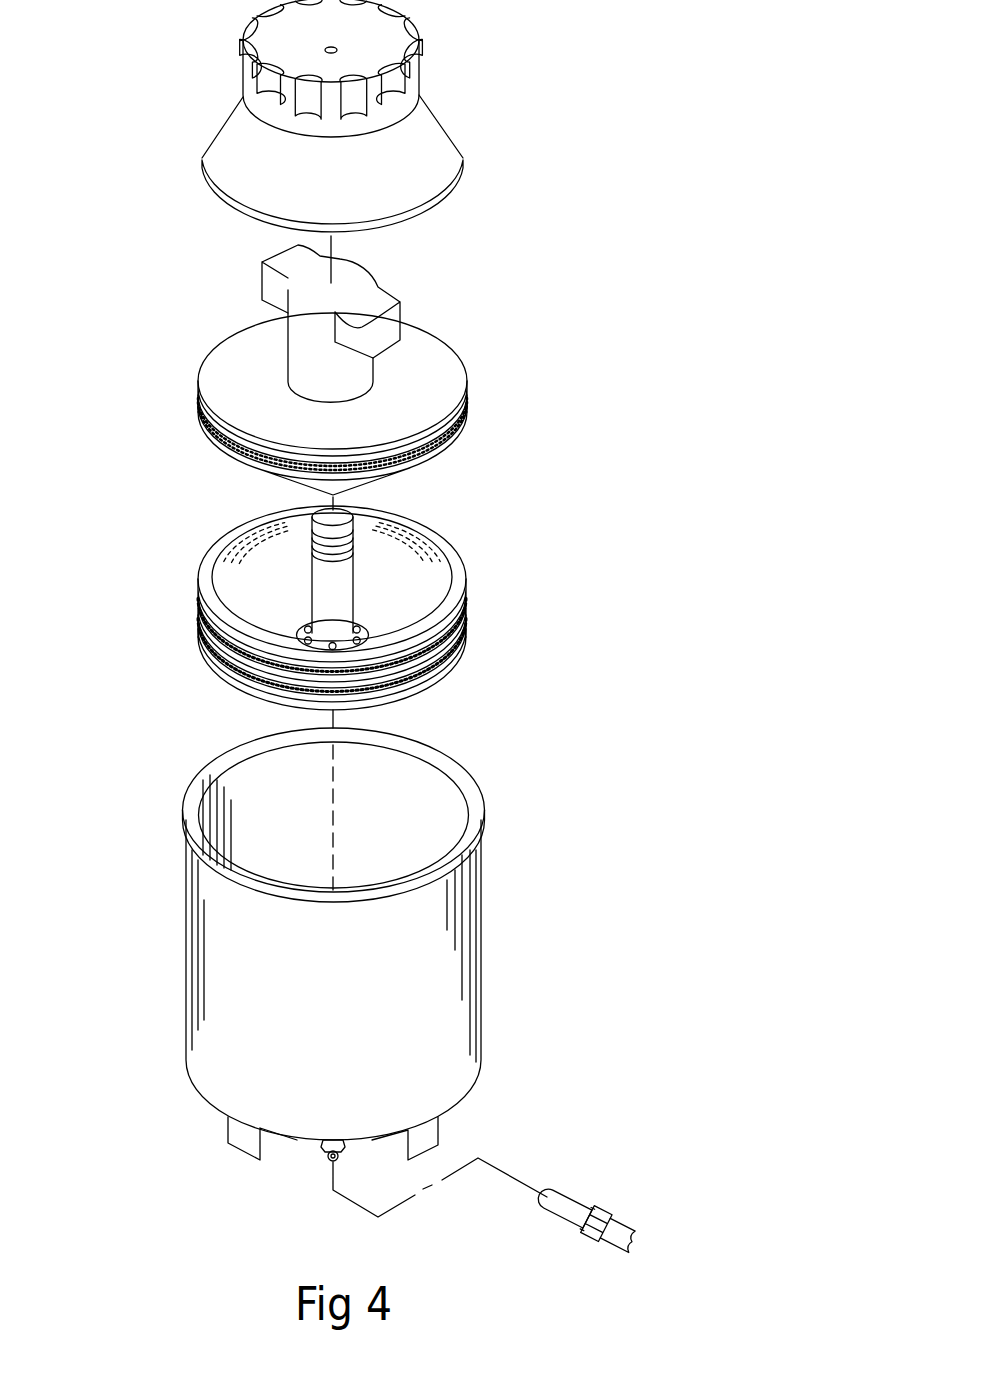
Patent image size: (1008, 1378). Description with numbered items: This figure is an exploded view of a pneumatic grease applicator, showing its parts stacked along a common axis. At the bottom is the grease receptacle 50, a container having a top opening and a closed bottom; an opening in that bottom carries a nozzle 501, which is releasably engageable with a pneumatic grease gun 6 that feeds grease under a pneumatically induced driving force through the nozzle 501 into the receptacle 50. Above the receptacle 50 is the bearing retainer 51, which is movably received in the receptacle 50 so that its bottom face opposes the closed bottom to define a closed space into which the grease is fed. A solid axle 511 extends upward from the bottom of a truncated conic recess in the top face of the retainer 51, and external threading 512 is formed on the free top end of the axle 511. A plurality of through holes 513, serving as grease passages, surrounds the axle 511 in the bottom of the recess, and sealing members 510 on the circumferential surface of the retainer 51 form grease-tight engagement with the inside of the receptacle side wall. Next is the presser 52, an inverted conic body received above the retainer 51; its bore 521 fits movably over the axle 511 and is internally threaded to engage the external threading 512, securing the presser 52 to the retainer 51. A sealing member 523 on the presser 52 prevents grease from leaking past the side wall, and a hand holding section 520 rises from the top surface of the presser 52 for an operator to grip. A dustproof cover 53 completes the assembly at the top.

The dustproof cover 53 is at (447, 148).
The hand holding section 520 is at (277, 297).
The presser 52 is at (388, 363).
The sealing member 523 is at (465, 413).
The bore 521 is at (347, 497).
The external threading 512 is at (315, 533).
The axle 511 is at (260, 593).
The bearing retainer 51 is at (381, 593).
The sealing members 510 is at (465, 643).
The through holes 513 is at (297, 628).
The grease receptacle 50 is at (305, 982).
The nozzle 501 is at (323, 1157).
The pneumatic grease gun 6 is at (567, 1193).